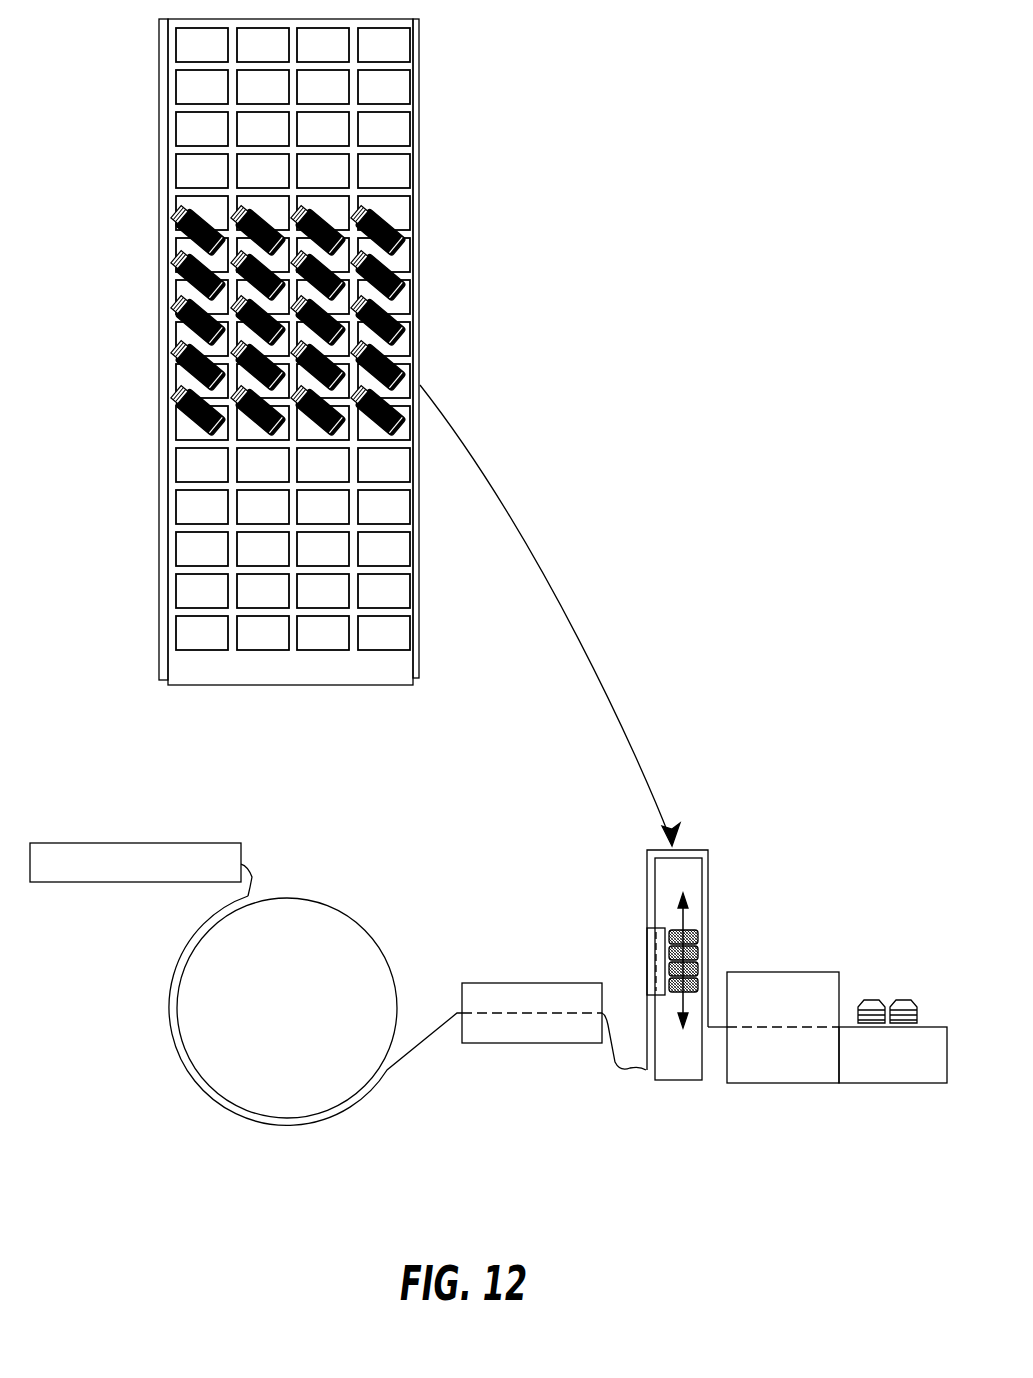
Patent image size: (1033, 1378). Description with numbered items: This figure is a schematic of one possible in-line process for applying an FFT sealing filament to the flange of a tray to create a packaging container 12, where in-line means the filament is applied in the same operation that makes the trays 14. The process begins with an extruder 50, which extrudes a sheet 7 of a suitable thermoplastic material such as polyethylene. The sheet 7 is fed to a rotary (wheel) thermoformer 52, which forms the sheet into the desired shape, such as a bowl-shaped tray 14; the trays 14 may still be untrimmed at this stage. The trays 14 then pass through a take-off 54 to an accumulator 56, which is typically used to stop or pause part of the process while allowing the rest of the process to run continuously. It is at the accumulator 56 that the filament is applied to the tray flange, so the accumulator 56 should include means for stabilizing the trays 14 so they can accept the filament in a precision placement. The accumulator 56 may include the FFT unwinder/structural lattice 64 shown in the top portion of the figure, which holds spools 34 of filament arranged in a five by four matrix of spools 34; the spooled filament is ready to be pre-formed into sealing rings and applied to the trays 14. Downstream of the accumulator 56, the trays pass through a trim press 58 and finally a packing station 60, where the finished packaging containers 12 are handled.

The FFT unwinder/supply lattice 64 is at (140, 228).
The spools 34 is at (385, 222).
The extruder 50 is at (135, 843).
The sheet 7 is at (253, 877).
The rotary former 52 is at (240, 1085).
The trays 14 is at (423, 1040).
The take-off 54 is at (523, 1035).
The accumulator 56 is at (677, 1081).
The trim press 58 is at (782, 1085).
The packing station 60 is at (892, 1085).
The packaging container 12 is at (917, 995).